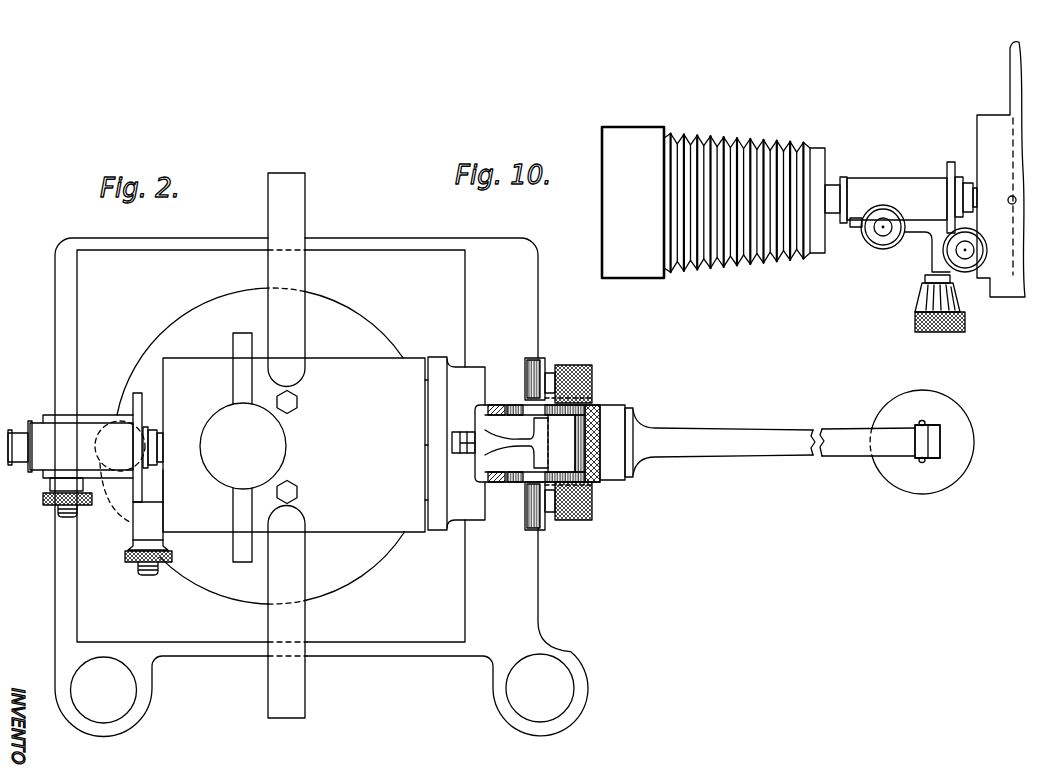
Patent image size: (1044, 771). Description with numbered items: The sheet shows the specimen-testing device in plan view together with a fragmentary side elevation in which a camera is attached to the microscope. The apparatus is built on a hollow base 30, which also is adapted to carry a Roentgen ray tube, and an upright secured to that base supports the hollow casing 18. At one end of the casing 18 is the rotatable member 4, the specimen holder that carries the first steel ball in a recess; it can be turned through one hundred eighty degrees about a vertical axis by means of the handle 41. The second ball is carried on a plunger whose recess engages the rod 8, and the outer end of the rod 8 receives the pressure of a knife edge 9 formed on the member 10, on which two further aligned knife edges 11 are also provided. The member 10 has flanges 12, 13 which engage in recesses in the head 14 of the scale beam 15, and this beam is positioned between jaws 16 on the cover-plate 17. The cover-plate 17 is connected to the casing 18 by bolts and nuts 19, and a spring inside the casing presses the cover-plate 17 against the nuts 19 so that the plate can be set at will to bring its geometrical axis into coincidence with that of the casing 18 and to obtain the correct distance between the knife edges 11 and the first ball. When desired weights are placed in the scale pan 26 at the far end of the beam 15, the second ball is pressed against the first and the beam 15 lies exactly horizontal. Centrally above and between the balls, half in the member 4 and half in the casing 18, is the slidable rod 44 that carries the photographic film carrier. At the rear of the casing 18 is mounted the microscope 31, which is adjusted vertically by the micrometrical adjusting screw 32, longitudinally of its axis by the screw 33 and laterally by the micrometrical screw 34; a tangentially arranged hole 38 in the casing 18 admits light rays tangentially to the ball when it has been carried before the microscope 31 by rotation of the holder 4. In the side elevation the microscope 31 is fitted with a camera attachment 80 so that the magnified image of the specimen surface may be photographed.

In FIG. 2, the rotatable member 4 is at (243, 446).
In FIG. 2, the rod 8 is at (484, 445).
In FIG. 2, the knife edge 9 is at (540, 420).
In FIG. 2, the member 10 is at (566, 443).
In FIG. 2, the knife edges 11 is at (546, 366).
In FIG. 2, the flange 12 is at (520, 407).
In FIG. 2, the flange 13 is at (527, 478).
In FIG. 2, the head 14 is at (610, 470).
In FIG. 2, the scale beam 15 is at (677, 450).
In FIG. 2, the jaws 16 is at (494, 368).
In FIG. 2, the cover-plate 17 is at (440, 524).
In FIG. 2, the casing 18 is at (295, 445).
In FIG. 10, the casing 18 is at (977, 130).
In FIG. 2, the bolts and nuts 19 is at (470, 455).
In FIG. 2, the scale pan 26 is at (937, 483).
In FIG. 2, the hollow base 30 is at (321, 487).
In FIG. 2, the microscope 31 is at (85, 446).
In FIG. 10, the microscope 31 is at (892, 169).
In FIG. 2, the micrometrical adjusting screw 32 is at (120, 472).
In FIG. 10, the micrometrical adjusting screw 32 is at (920, 300).
In FIG. 2, the screw 33 is at (45, 496).
In FIG. 10, the screw 33 is at (874, 250).
In FIG. 2, the micrometrical screw 34 is at (138, 557).
In FIG. 10, the micrometrical screw 34 is at (963, 272).
In FIG. 10, the tangentially arranged hole 38 is at (1010, 197).
In FIG. 2, the handle 41 is at (234, 556).
In FIG. 2, the rod 44 is at (302, 632).
In FIG. 10, the camera attachment 80 is at (775, 152).